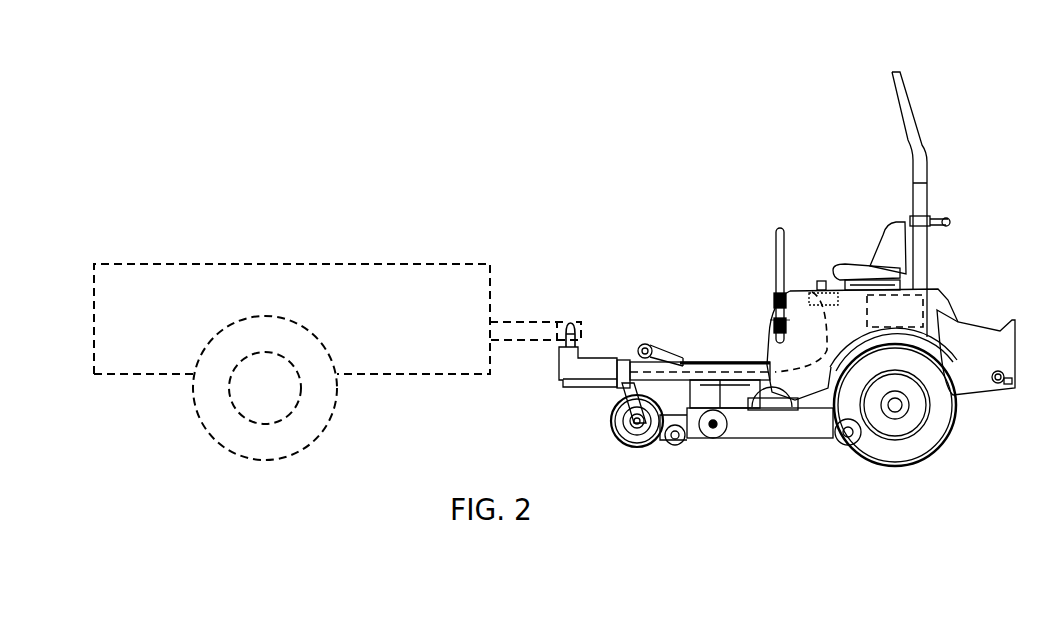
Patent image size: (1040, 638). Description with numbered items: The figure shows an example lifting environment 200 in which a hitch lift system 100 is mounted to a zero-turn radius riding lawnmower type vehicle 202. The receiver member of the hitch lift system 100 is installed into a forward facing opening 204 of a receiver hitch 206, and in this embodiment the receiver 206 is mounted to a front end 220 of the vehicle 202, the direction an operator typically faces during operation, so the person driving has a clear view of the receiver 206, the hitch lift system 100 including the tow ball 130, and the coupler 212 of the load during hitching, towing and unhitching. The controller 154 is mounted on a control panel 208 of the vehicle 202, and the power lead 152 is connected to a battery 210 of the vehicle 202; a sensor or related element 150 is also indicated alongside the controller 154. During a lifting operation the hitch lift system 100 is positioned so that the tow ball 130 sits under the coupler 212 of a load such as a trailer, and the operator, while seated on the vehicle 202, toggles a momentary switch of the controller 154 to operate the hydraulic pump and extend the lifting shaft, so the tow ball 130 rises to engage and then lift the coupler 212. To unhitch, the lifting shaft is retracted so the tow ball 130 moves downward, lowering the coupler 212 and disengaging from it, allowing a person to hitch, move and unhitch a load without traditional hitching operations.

The hitch lift system 100 is at (558, 398).
The tow ball 130 is at (572, 321).
The sensor 150 is at (811, 327).
The power lead 152 is at (833, 314).
The controller 154 is at (818, 281).
The lifting environment 200 is at (966, 93).
The vehicle 202 is at (955, 178).
The opening 204 is at (611, 404).
The receiver hitch 206 is at (648, 402).
The control panel 208 is at (816, 280).
The battery 210 is at (912, 322).
The coupler 212 is at (564, 321).
The front end 220 is at (645, 331).